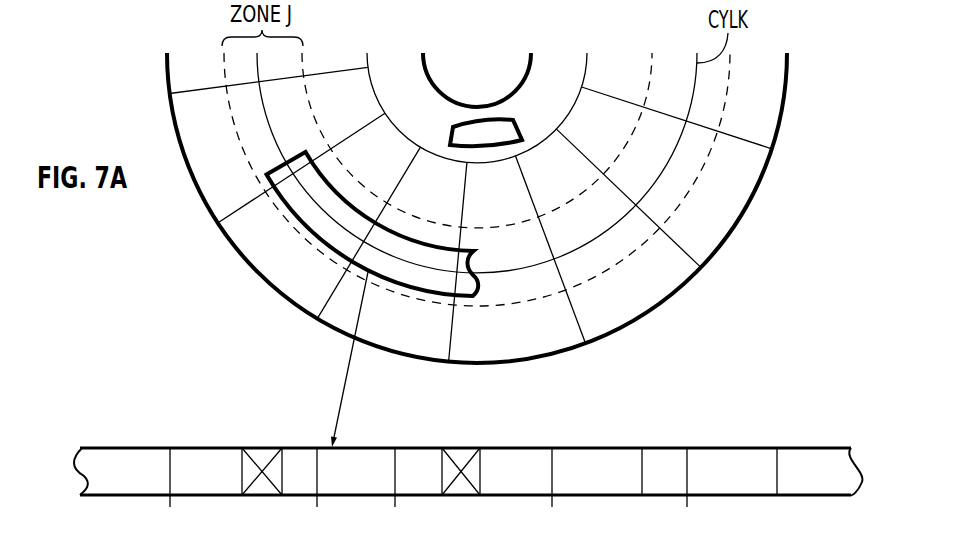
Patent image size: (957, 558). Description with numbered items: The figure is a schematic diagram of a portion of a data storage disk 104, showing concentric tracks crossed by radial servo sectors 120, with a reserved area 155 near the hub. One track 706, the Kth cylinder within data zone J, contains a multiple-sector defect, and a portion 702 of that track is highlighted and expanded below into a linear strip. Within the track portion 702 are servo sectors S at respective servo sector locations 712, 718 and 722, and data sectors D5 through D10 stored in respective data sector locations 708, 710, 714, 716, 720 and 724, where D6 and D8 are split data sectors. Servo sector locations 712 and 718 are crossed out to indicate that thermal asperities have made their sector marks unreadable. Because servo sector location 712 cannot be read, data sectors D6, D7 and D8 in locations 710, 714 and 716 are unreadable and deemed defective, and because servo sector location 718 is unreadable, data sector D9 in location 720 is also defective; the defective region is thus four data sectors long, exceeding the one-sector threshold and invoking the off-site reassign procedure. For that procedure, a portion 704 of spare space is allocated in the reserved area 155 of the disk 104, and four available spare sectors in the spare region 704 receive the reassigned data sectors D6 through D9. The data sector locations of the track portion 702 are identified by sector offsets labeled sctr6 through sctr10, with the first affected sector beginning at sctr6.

The disk 104 is at (720, 247).
The reserved area 155 is at (548, 62).
The servo sectors 120 is at (217, 227).
The track portion 702 is at (424, 243).
The spare region 704 is at (518, 133).
The track 706 is at (657, 183).
The data sector location 708 is at (110, 447).
The data sector location 710 is at (298, 448).
The servo sector location 712 is at (263, 496).
The data sector location 714 is at (350, 448).
The data sector location 716 is at (495, 448).
The servo sector location 718 is at (463, 496).
The data sector location 720 is at (580, 448).
The servo sector location 722 is at (663, 448).
The data sector location 724 is at (728, 448).